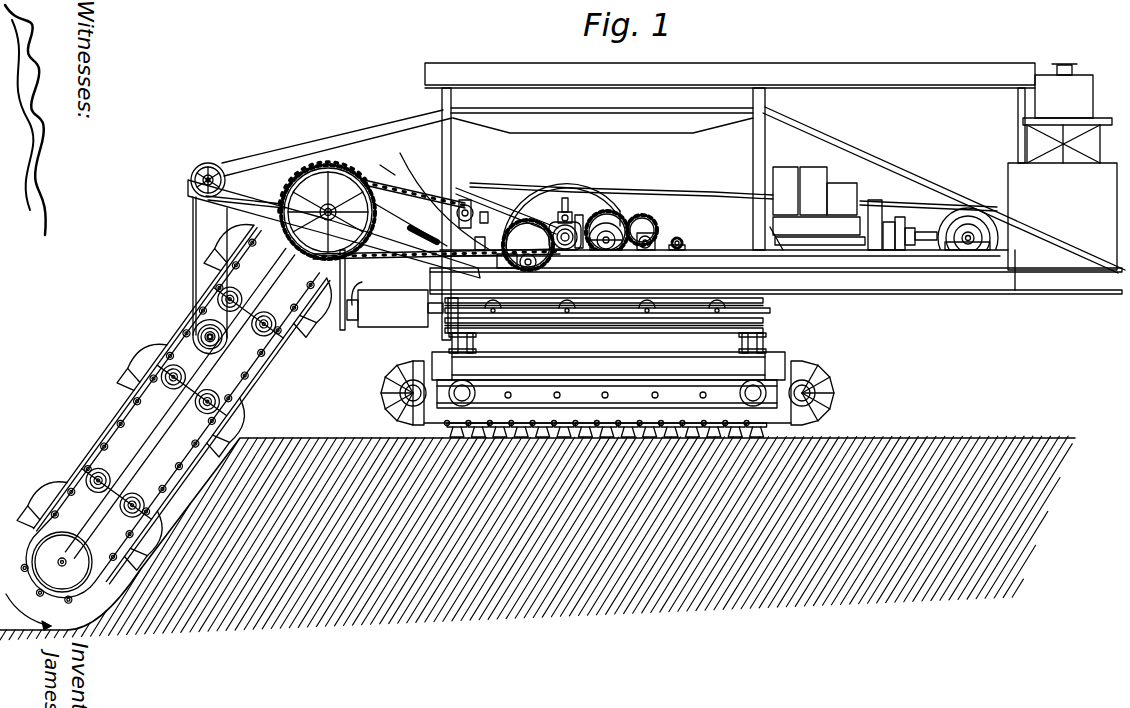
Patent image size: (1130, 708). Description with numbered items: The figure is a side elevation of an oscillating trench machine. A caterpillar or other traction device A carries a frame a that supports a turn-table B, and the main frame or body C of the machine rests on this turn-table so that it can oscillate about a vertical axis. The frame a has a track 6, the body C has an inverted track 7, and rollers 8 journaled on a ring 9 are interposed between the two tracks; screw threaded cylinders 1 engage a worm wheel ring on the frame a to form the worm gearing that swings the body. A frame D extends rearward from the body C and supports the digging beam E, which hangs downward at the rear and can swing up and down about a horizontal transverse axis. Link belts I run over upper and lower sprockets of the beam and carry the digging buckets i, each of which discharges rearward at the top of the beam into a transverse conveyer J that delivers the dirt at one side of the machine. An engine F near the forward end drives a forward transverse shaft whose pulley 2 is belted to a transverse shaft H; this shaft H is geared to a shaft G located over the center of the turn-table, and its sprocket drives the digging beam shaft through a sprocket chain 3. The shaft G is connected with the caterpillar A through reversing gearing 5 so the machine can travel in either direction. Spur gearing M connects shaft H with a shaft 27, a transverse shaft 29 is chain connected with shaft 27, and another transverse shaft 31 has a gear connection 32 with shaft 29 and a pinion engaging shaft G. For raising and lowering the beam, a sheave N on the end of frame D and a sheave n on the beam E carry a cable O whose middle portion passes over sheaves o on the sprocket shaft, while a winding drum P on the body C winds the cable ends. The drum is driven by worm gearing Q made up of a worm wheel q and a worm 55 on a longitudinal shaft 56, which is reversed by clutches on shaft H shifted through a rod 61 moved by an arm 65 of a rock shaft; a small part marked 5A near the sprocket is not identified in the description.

The sheave N is at (210, 164).
The sheaves o is at (317, 188).
The cable O is at (387, 175).
The worm gearing Q is at (433, 175).
The frame D is at (271, 201).
The winding drum P is at (390, 252).
The worm wheel q is at (465, 205).
The bearing bracket 5A is at (487, 200).
The sprocket chain 3 is at (496, 208).
The shaft 27 is at (522, 202).
The ring 9 is at (566, 198).
The rod 61 is at (575, 214).
The arm 65 is at (600, 208).
The screw threaded cylinders 1 is at (683, 198).
The engine F is at (782, 178).
The reversing gearing 5 is at (618, 220).
The gear connection 32 is at (653, 225).
The transverse shaft 29 is at (674, 238).
The transverse shaft 31 is at (645, 235).
The worm 55 is at (383, 217).
The longitudinal shaft 56 is at (500, 270).
The spur gearing M is at (553, 272).
The transverse shaft H is at (568, 247).
The shaft G is at (606, 247).
The pulley 2 is at (940, 226).
The main frame or body C is at (950, 296).
The inverted track 7 is at (763, 297).
The turn-table B is at (770, 310).
The track 6 is at (763, 321).
The rollers 8 is at (493, 320).
The frame a is at (643, 362).
The caterpillar or traction device A is at (830, 402).
The conveyer J is at (387, 313).
The link belts I is at (180, 346).
The sheave n is at (192, 331).
The digging beam E is at (213, 373).
The digging buckets i is at (117, 570).